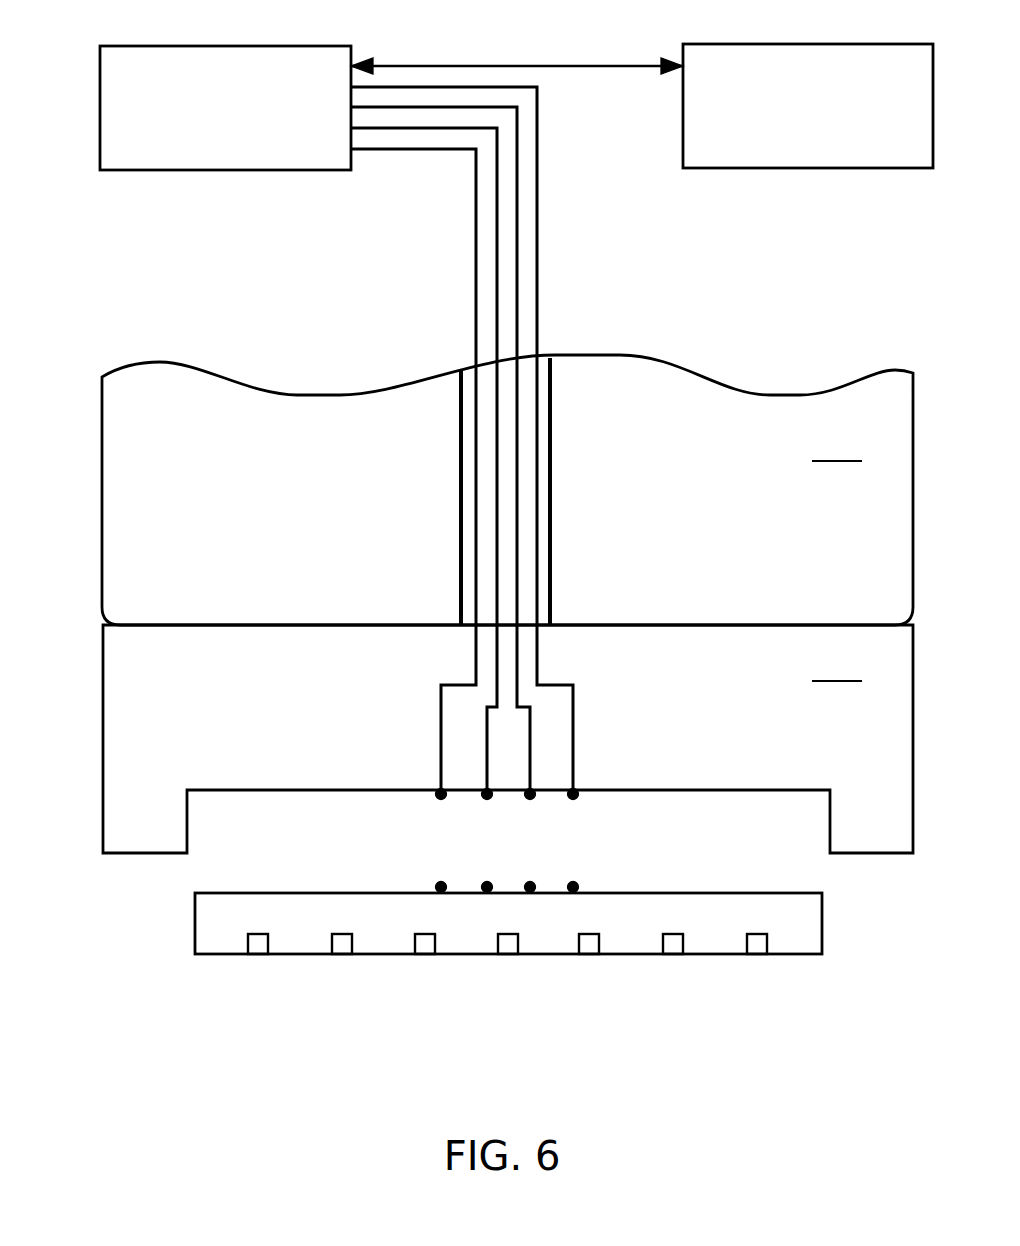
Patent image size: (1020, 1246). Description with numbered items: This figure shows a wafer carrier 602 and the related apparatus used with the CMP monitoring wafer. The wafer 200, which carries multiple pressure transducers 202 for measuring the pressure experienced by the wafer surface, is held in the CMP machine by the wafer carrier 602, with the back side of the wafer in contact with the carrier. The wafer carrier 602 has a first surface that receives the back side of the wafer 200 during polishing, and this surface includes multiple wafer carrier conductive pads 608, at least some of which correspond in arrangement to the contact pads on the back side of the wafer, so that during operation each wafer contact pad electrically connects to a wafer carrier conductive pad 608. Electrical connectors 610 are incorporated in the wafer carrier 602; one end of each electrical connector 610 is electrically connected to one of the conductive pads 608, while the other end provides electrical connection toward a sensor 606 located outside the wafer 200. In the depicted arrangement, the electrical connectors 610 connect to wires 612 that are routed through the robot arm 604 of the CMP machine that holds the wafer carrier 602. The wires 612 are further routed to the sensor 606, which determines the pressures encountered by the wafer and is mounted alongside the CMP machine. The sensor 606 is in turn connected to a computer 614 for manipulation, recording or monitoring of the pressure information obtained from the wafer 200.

The sensor 606 is at (230, 152).
The computer 614 is at (818, 150).
The robot arm 604 is at (507, 490).
The wires 612 is at (477, 460).
The electrical connectors 610 is at (441, 708).
The wafer carrier 602 is at (508, 739).
The wafer carrier conductive pads 608 is at (575, 798).
The wafer 200 is at (508, 923).
The pressure transducers 202 is at (258, 952).